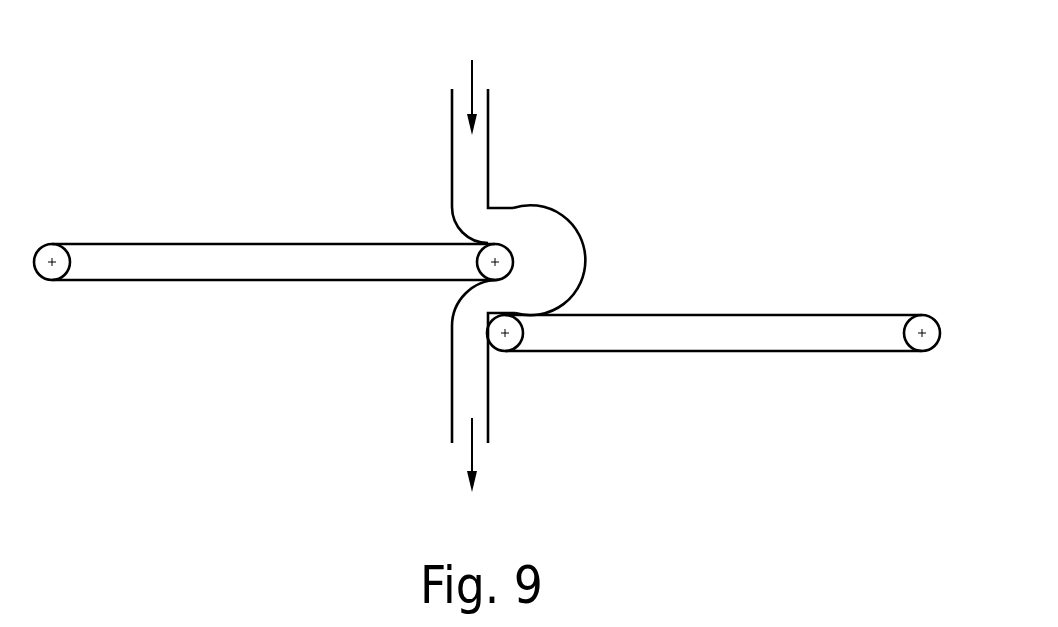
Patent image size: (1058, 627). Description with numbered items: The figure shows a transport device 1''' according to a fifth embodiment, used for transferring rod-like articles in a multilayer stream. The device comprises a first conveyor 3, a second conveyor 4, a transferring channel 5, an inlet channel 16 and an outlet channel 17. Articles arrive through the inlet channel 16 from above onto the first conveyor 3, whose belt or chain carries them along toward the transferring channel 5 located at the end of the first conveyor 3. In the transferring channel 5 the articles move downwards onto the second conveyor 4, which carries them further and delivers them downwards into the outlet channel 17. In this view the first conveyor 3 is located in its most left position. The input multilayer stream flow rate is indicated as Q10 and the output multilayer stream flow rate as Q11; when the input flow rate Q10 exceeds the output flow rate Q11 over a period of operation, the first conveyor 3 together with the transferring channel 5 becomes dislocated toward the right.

The transport device 1''' is at (257, 83).
The first conveyor 3 is at (215, 244).
The second conveyor 4 is at (760, 315).
The transferring channel 5 is at (534, 245).
The inlet channel 16 is at (452, 147).
The outlet channel 17 is at (452, 410).
The input multilayer stream flow rate Q10 is at (472, 73).
The output multilayer stream flow rate Q11 is at (472, 450).